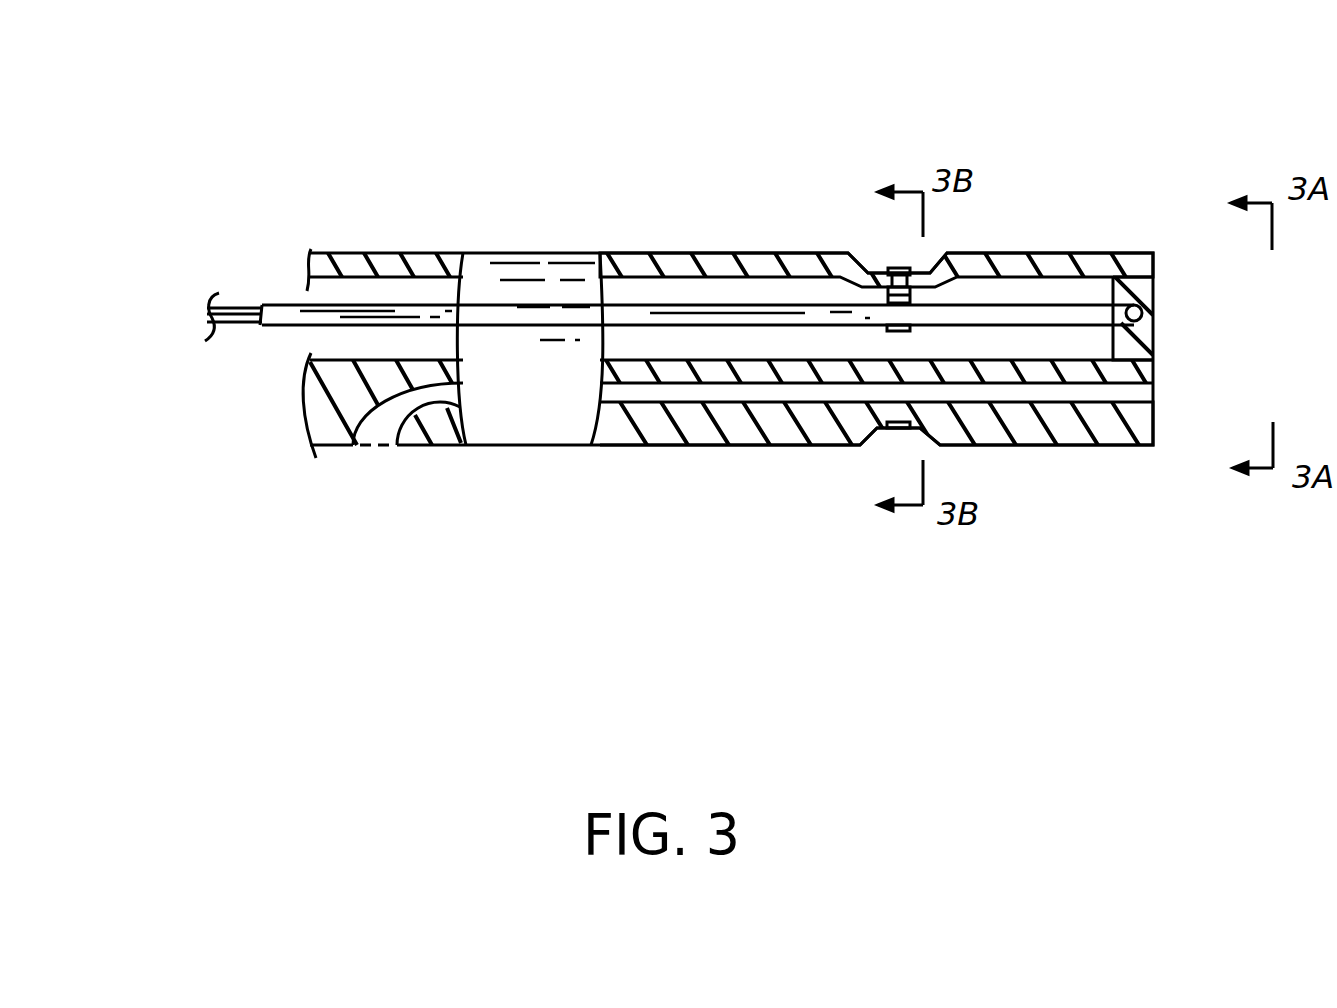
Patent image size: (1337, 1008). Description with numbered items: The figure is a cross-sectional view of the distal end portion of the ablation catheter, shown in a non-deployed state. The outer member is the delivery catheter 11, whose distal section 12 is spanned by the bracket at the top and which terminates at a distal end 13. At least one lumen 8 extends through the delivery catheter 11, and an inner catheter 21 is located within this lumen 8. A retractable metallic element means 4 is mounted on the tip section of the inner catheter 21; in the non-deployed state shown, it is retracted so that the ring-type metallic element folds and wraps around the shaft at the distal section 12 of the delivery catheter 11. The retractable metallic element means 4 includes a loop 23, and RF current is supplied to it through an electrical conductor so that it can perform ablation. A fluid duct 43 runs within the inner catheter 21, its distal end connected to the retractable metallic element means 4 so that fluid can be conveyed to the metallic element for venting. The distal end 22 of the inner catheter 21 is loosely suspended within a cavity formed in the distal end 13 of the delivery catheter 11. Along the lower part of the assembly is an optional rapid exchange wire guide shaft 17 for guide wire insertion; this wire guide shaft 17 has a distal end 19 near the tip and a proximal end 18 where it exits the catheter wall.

The distal section 12 is at (1167, 90).
The fluid duct 43 is at (244, 305).
The inner catheter 21 is at (355, 305).
The delivery catheter 11 is at (555, 253).
The lumen 8 is at (677, 293).
The loop 23 is at (920, 257).
The retractable metallic element means 4 is at (922, 298).
The distal end 13 is at (1158, 242).
The distal end 22 is at (1147, 311).
The distal end 19 is at (1157, 390).
The proximal end 18 is at (372, 450).
The wire guide shaft 17 is at (740, 393).